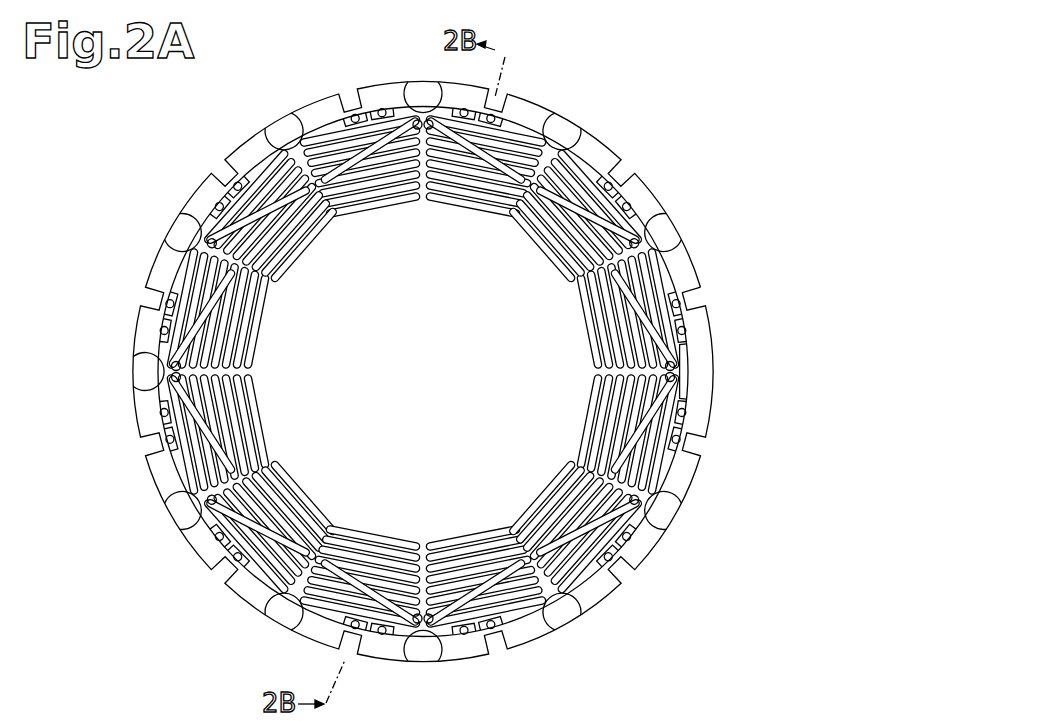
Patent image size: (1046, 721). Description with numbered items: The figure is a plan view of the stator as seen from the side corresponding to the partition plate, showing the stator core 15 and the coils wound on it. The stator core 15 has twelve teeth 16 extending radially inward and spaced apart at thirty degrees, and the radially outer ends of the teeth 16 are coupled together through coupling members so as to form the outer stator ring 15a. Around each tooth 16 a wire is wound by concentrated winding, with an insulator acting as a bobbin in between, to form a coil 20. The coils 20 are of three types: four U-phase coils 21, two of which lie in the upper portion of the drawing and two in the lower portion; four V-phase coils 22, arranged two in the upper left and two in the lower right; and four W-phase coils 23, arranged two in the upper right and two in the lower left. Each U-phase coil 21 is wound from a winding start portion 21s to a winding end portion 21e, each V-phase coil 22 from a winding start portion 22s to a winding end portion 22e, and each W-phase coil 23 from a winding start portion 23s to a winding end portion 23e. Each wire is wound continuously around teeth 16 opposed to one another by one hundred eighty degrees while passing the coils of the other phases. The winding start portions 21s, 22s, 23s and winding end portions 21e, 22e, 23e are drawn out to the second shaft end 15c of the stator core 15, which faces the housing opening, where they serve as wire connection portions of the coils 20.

The stator core 15 is at (651, 182).
The outer stator ring 15a is at (690, 258).
The second shaft end 15c is at (168, 214).
The teeth 16 is at (438, 208).
The coil 20 is at (256, 178).
The U-phase coil 21 is at (407, 105).
The winding end portion 21e is at (350, 115).
The winding start portion 21s is at (381, 107).
The V-phase coil 22 is at (670, 320).
The winding end portion 22e is at (661, 229).
The winding start portion 22s is at (681, 300).
The W-phase coil 23 is at (568, 126).
The winding end portion 23e is at (424, 113).
The winding start portion 23s is at (497, 110).